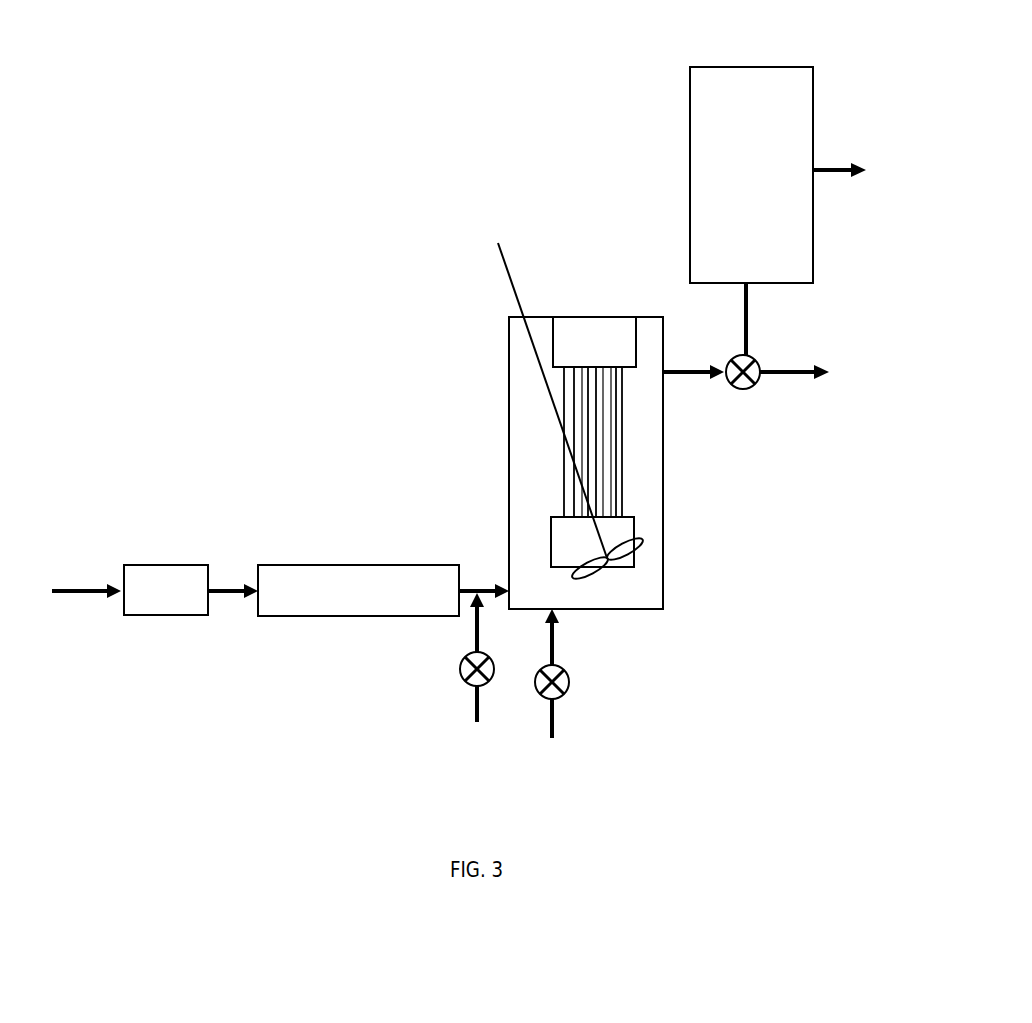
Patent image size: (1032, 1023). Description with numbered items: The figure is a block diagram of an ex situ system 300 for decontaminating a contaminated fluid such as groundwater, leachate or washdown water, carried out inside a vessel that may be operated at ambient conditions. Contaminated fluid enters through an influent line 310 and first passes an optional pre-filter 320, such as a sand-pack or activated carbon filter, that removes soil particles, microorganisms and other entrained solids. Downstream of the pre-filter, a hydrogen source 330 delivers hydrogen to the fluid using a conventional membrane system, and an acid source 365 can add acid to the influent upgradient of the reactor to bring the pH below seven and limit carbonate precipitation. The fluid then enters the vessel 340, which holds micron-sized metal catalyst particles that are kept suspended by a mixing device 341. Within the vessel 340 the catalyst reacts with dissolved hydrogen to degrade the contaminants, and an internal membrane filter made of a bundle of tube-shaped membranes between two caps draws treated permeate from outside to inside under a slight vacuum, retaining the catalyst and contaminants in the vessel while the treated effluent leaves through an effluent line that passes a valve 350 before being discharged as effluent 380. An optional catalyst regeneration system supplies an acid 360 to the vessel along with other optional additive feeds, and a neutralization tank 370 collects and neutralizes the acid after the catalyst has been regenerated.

The ex situ system 300 is at (437, 275).
The influent line 310 is at (80, 587).
The pre-filter 320 is at (163, 617).
The hydrogen source 330 is at (340, 618).
The vessel 340 is at (593, 316).
The mixing device 341 is at (510, 289).
The outlet valve 350 is at (797, 380).
The acid 360 is at (627, 690).
The acid source 365 is at (479, 673).
The neutralization tank 370 is at (750, 65).
The product outlet stream 380 is at (867, 170).